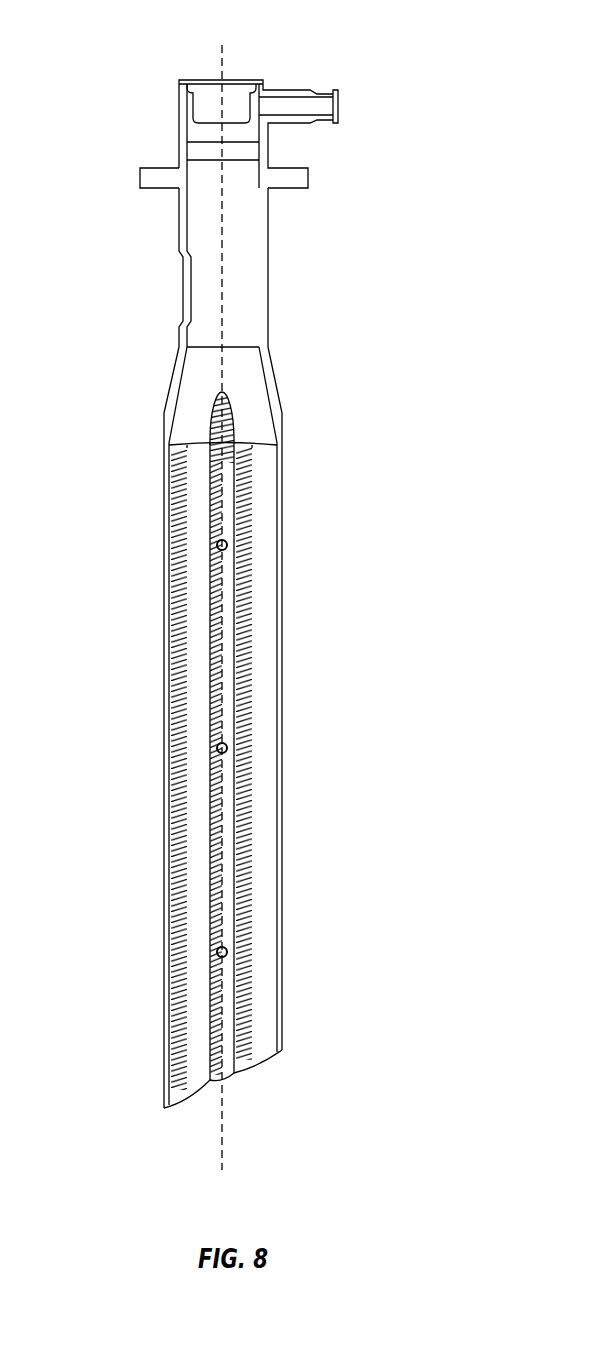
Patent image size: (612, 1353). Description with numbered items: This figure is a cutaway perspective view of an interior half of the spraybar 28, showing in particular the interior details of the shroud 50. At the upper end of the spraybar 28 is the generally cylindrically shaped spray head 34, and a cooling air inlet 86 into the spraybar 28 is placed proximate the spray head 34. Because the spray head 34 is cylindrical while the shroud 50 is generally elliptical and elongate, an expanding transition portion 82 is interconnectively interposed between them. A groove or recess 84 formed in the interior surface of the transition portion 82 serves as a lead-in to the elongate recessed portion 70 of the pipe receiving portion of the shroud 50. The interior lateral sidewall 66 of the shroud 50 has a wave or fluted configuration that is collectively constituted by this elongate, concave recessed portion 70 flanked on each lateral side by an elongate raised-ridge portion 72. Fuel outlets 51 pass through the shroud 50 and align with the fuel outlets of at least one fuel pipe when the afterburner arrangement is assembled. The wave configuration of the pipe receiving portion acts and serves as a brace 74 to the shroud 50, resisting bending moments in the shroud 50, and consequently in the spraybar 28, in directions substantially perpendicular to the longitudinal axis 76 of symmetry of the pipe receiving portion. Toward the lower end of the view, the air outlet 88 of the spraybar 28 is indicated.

The spraybar 28 is at (186, 46).
The spray head 34 is at (148, 121).
The cooling air inlet 86 is at (179, 290).
The expanding transition portion 82 is at (165, 376).
The groove or recess 84 is at (227, 425).
The shroud 50 is at (166, 575).
The fuel outlets 51 is at (227, 543).
The interior lateral sidewall 66 is at (244, 573).
The elongate recessed portion 70 is at (228, 665).
The raised-ridge portion 72 is at (210, 715).
The brace 74 is at (203, 856).
The air outlet 88 is at (249, 1087).
The longitudinal axis of symmetry 76 is at (222, 1142).